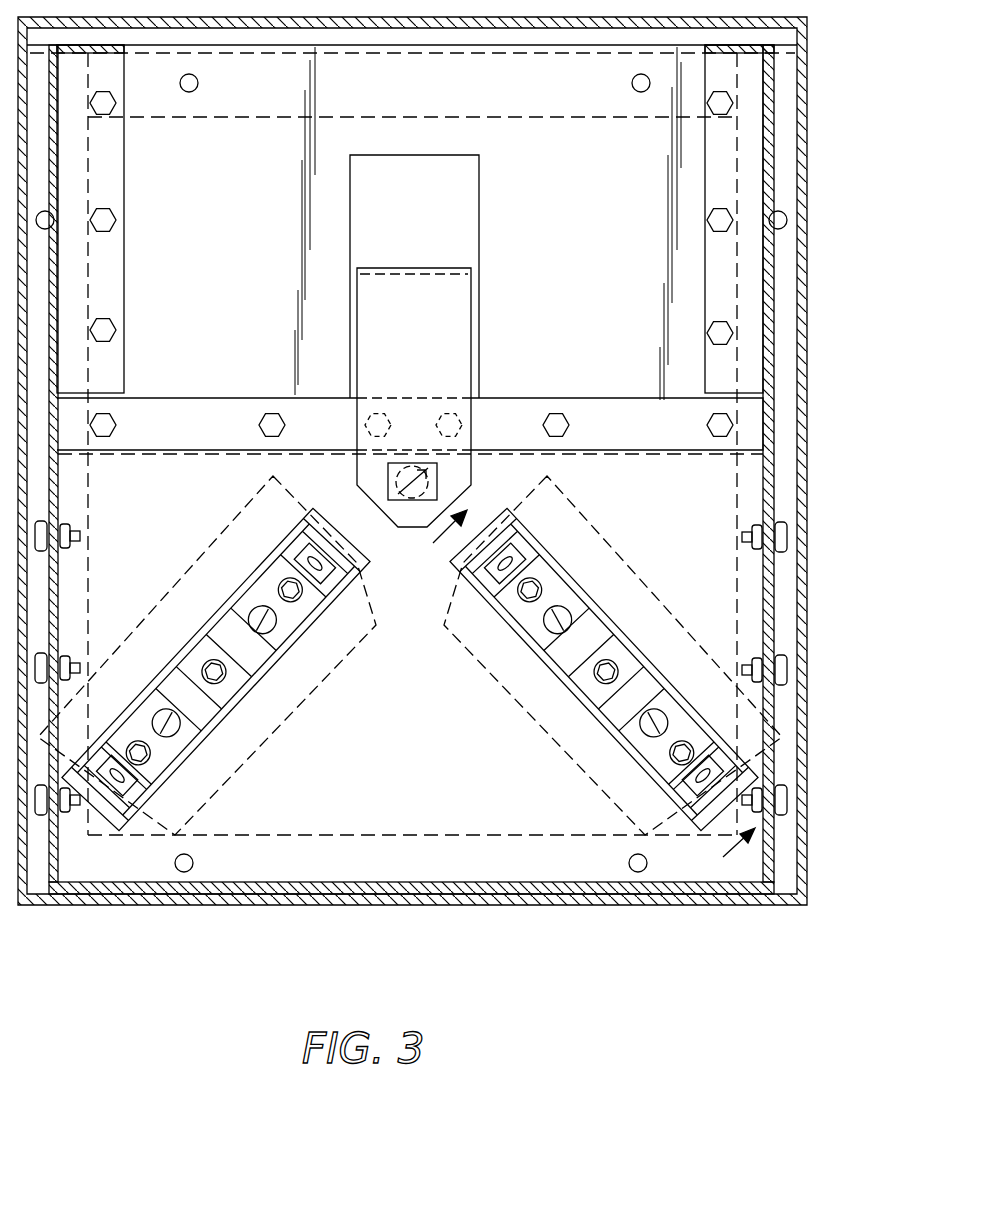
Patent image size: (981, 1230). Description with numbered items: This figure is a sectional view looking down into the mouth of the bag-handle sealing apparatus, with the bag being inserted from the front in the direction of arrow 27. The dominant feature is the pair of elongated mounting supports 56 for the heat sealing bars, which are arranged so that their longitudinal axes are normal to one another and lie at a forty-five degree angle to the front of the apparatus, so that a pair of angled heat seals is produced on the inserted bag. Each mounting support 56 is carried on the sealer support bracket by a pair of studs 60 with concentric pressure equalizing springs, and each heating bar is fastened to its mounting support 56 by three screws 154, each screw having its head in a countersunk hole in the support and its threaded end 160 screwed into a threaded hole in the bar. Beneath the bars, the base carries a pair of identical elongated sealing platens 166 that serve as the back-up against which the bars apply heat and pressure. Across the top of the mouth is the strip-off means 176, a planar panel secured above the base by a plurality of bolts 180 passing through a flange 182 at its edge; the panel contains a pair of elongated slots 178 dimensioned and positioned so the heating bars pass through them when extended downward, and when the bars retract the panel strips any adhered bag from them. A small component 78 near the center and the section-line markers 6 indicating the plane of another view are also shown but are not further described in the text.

The arrow 27 is at (410, 912).
The mounting support 56 is at (250, 672).
The studs 60 is at (272, 626).
The pivot block 78 is at (400, 492).
The screws 154 is at (300, 590).
The threaded end 160 is at (410, 672).
The sealing platens 166 is at (228, 812).
The strip-off means 176 is at (375, 770).
The slots 178 is at (283, 647).
The bolts 180 is at (265, 415).
The flange 182 is at (601, 410).
The section line 6- 6 is at (579, 692).